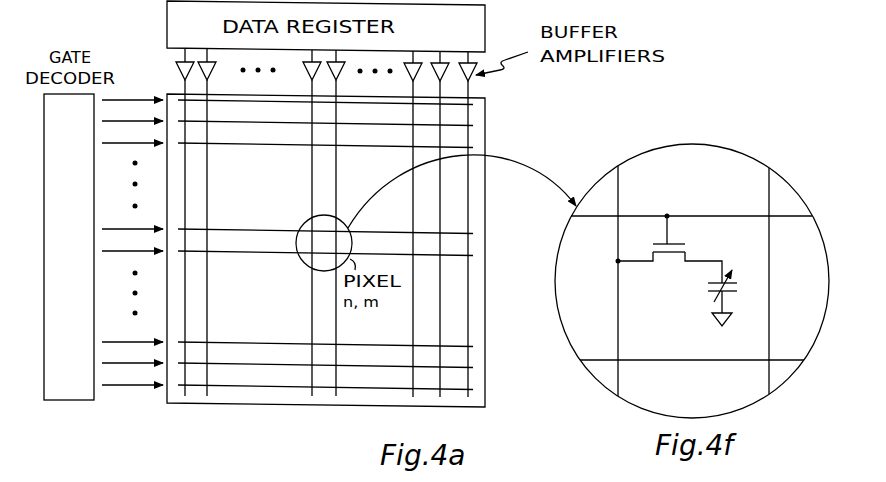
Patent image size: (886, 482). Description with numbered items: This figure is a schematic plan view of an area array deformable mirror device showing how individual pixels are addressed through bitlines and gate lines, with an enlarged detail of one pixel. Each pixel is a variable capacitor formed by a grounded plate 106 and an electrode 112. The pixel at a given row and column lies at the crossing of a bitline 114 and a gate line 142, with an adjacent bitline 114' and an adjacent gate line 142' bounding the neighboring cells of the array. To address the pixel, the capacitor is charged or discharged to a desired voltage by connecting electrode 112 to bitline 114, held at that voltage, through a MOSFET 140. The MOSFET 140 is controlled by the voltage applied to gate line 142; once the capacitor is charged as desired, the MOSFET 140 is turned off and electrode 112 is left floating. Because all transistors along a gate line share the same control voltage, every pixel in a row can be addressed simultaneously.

The bitline 114 is at (640, 256).
The adjacent bitline 114' is at (806, 275).
The gate line 142 is at (656, 230).
The adjacent gate line 142' is at (655, 342).
The MOSFET 140 is at (669, 271).
The electrode 112 is at (740, 278).
The plate 106 is at (737, 298).